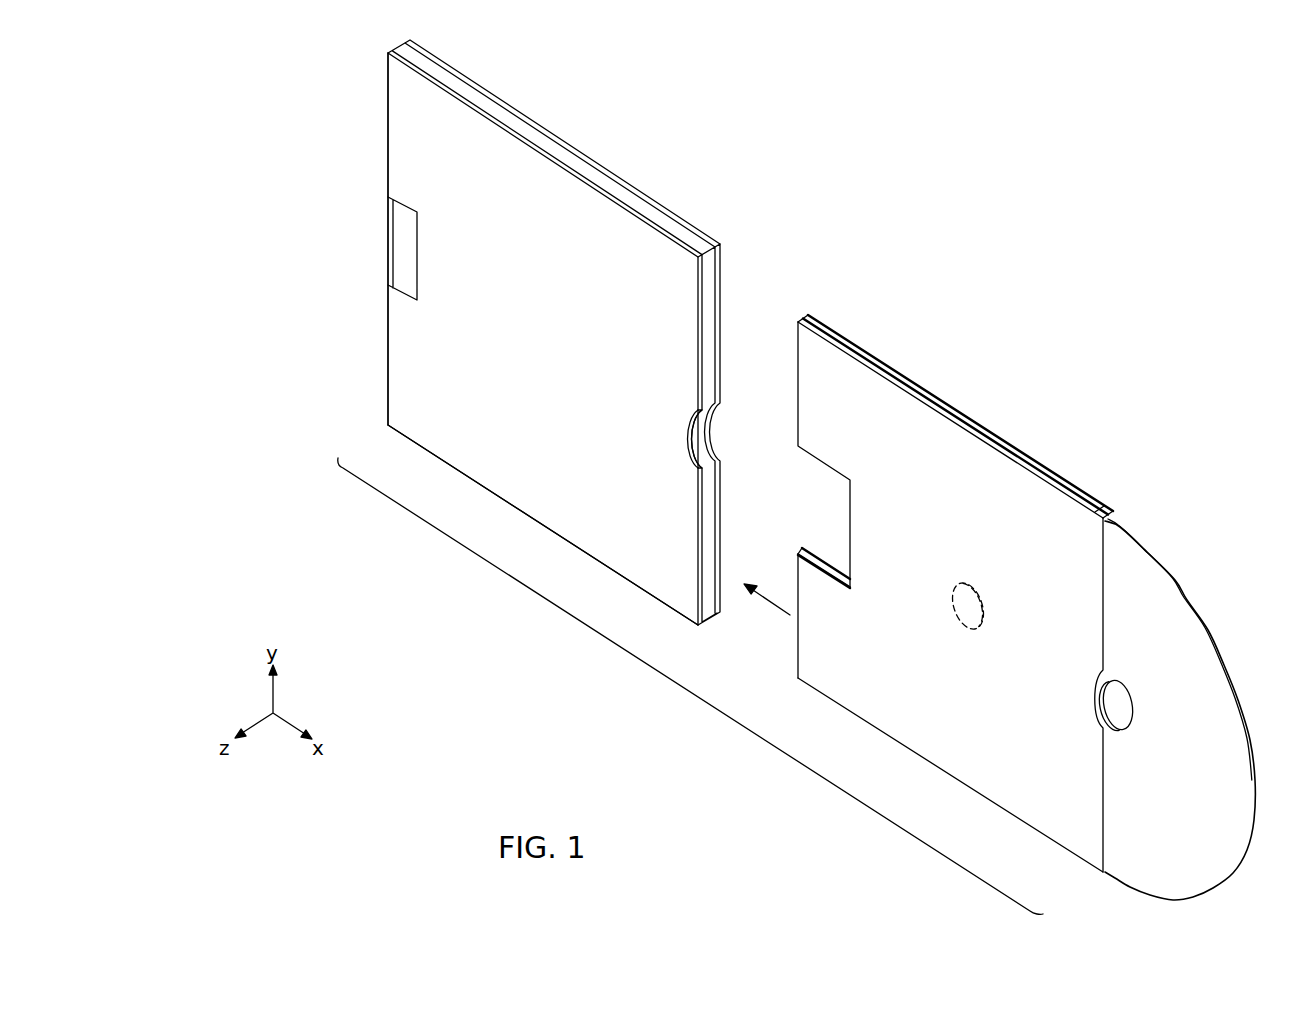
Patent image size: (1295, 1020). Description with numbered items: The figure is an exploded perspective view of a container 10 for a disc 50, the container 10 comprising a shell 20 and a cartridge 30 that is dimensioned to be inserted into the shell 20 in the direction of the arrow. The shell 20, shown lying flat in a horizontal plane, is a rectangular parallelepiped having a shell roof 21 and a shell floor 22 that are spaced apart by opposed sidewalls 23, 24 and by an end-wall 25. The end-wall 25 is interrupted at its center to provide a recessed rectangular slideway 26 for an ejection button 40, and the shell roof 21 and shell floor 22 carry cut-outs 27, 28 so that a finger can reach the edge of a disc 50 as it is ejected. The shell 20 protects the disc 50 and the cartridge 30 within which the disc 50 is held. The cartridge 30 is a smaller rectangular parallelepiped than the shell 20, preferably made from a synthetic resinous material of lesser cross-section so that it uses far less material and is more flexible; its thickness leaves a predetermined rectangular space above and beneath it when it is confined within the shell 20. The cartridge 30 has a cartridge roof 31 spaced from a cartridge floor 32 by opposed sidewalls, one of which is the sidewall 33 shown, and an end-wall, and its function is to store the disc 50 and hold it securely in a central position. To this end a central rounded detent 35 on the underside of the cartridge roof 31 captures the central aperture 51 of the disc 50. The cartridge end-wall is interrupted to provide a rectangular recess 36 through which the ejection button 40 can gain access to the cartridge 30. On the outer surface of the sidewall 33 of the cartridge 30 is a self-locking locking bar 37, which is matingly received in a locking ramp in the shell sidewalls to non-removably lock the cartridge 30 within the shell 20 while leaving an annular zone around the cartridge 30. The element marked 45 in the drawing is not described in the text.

The container 10 is at (677, 683).
The shell 20 is at (551, 332).
The shell roof 21 is at (593, 208).
The shell floor 22 is at (708, 272).
The sidewall 23 is at (629, 200).
The sidewall 24 is at (396, 432).
The end-wall 25 is at (388, 357).
The slideway 26 is at (418, 268).
The cut-out 27 is at (700, 457).
The cut-out 28 is at (713, 422).
The cartridge 30 is at (931, 603).
The cartridge roof 31 is at (955, 398).
The cartridge floor 32 is at (905, 747).
The sidewall 33 is at (1010, 817).
The rounded detent 35 is at (962, 582).
The rectangular recess 36 is at (827, 332).
The locking bar 37 is at (808, 548).
The ejection button 40 is at (400, 248).
The notch 45 is at (811, 381).
The disc 50 is at (1155, 709).
The central aperture 51 is at (1118, 703).